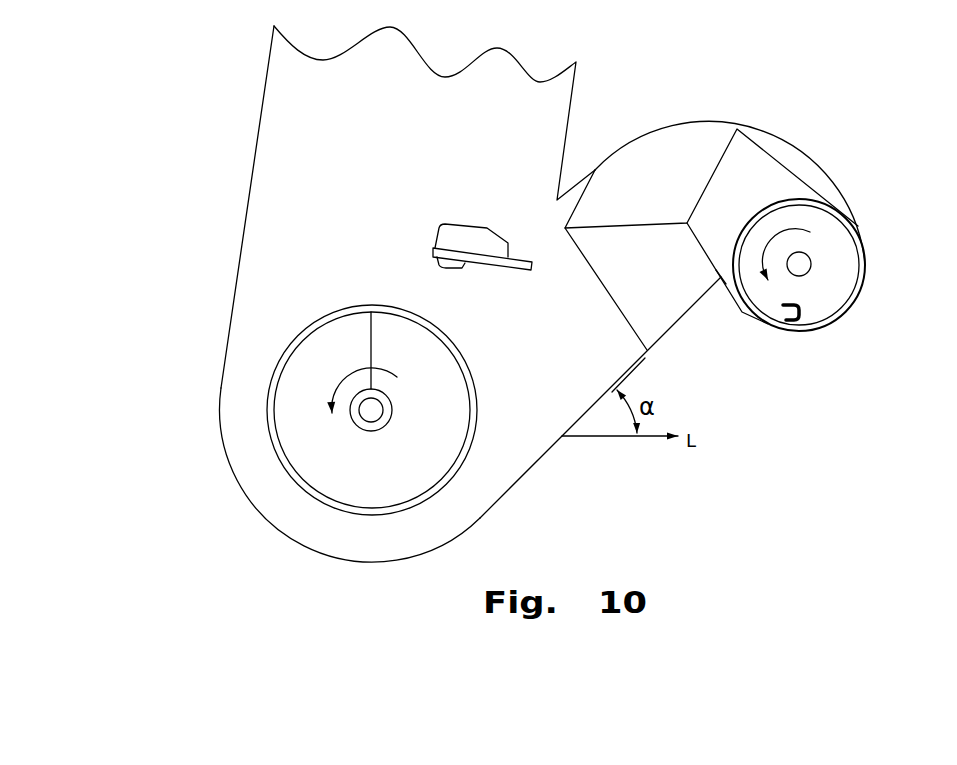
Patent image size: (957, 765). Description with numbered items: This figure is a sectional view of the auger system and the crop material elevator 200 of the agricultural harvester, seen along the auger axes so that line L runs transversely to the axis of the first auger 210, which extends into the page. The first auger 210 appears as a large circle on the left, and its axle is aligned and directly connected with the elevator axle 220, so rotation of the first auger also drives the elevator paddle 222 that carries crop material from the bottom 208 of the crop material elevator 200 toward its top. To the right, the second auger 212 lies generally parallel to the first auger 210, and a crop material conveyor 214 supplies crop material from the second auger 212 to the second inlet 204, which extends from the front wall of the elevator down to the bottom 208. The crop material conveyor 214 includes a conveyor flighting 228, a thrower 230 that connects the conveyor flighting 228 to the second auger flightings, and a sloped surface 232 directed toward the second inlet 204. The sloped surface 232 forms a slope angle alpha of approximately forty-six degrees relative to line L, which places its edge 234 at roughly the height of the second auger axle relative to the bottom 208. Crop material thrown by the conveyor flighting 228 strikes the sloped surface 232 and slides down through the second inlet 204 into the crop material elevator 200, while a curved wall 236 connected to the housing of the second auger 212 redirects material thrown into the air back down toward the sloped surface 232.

The crop material elevator 200 is at (254, 153).
The second inlet 204 is at (628, 322).
The bottom 208 is at (302, 545).
The first auger 210 is at (322, 313).
The second auger 212 is at (745, 178).
The crop material conveyor 214 is at (745, 330).
The elevator axle 220 is at (381, 408).
The elevator paddle 222 is at (481, 230).
The conveyor flighting 228 is at (850, 307).
The thrower 230 is at (797, 325).
The sloped surface 232 is at (670, 328).
The edge 234 is at (722, 278).
The curved wall 236 is at (657, 137).